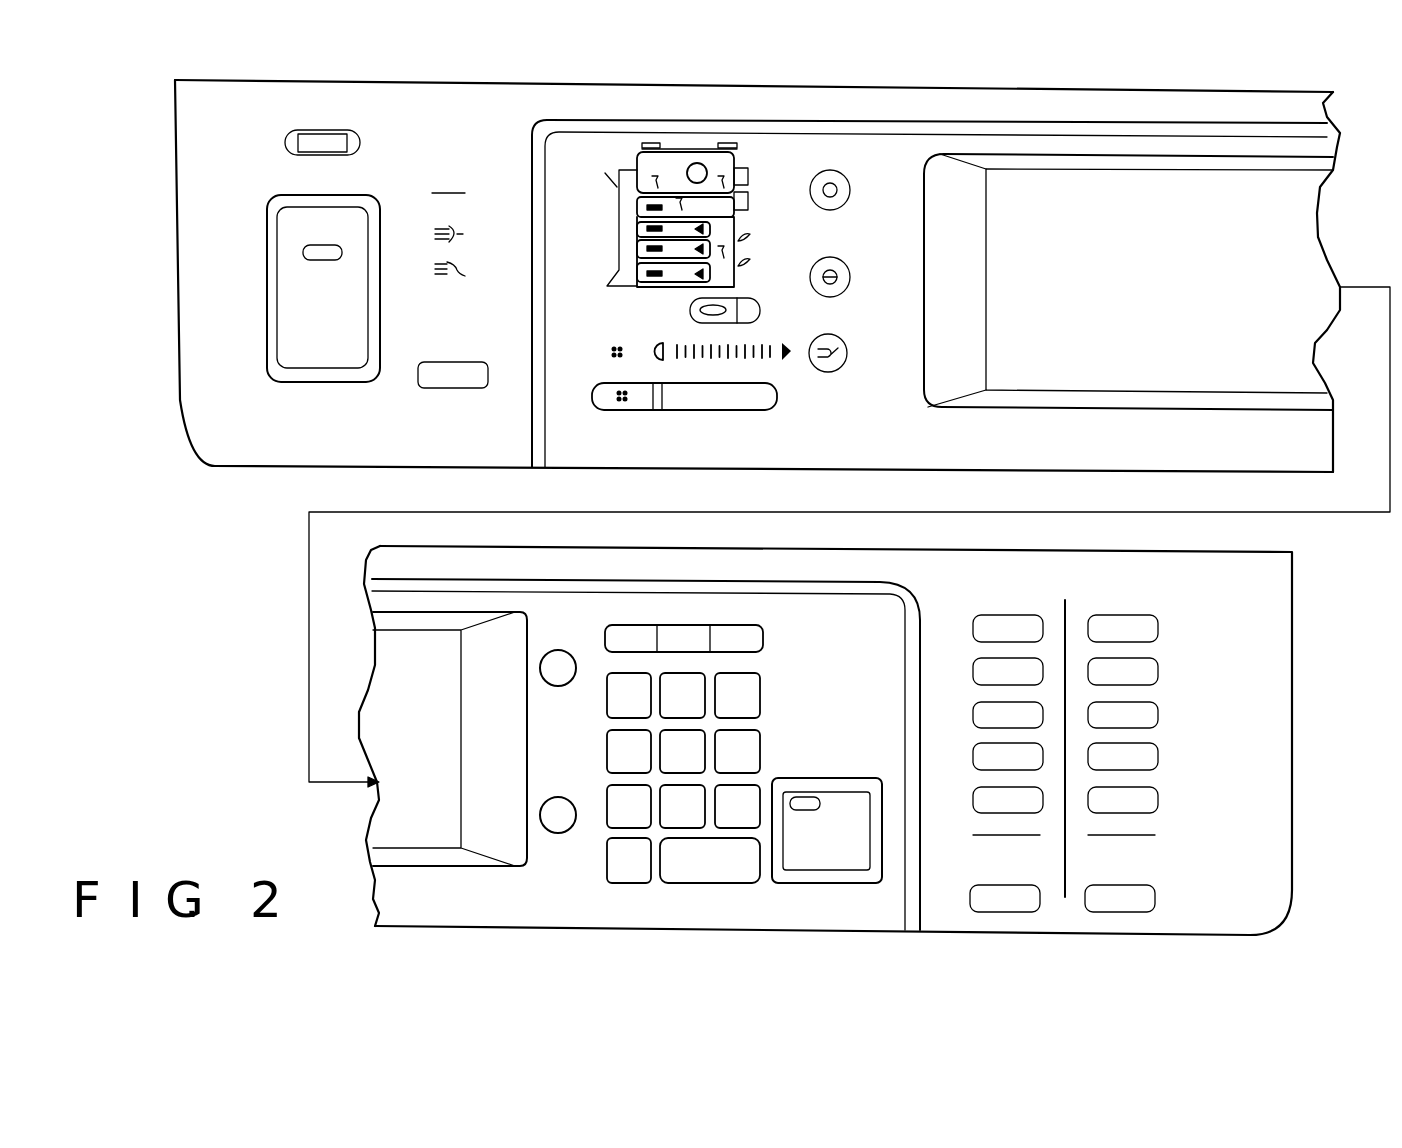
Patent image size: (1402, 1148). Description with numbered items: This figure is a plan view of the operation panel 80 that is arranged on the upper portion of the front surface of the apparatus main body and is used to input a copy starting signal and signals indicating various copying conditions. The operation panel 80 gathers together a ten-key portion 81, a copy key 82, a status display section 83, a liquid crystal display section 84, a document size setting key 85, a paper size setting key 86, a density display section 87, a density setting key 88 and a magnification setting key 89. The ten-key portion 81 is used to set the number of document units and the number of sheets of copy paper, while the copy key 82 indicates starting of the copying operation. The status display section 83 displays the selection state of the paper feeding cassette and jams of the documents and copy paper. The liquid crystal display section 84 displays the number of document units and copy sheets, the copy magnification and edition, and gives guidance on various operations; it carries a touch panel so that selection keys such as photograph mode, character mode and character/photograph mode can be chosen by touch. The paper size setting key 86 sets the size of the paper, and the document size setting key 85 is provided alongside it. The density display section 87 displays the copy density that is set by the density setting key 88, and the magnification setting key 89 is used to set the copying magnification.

The operation panel 80 is at (1211, 448).
The ten-key portion 81 is at (588, 850).
The copy key 82 is at (837, 802).
The status display section 83 is at (696, 163).
The liquid crystal display section 84 is at (1085, 186).
The document size setting key 85 is at (1105, 554).
The paper size setting key 86 is at (748, 204).
The density display section 87 is at (784, 371).
The density setting key 88 is at (647, 437).
The magnification setting key 89 is at (697, 602).